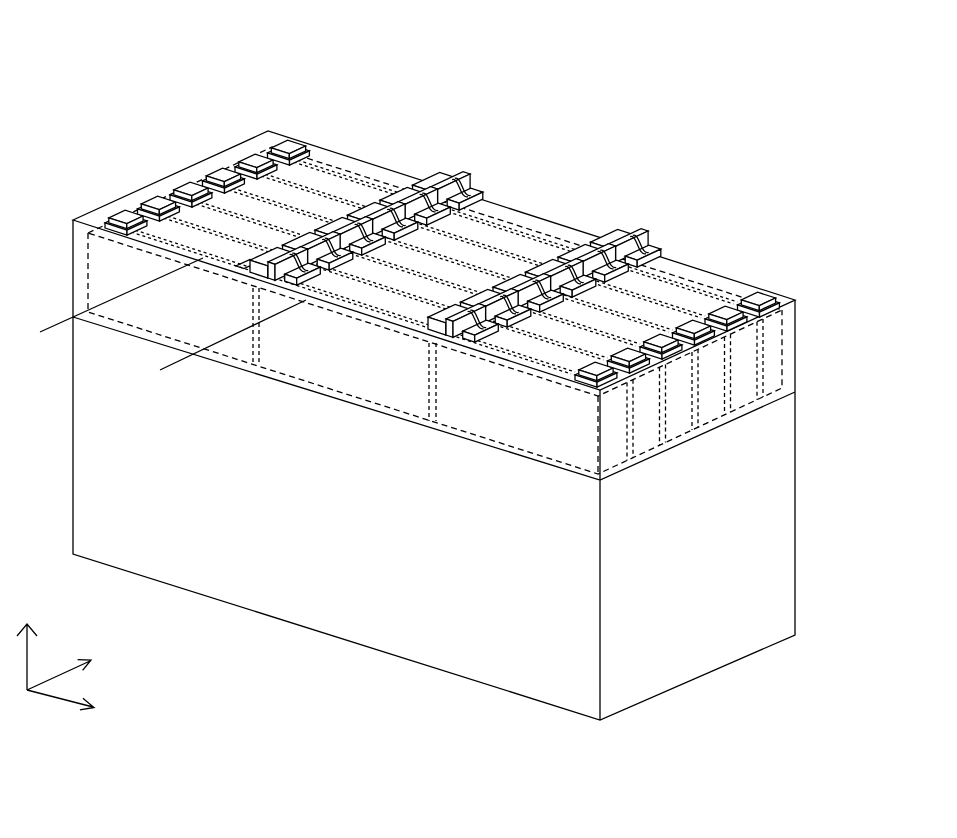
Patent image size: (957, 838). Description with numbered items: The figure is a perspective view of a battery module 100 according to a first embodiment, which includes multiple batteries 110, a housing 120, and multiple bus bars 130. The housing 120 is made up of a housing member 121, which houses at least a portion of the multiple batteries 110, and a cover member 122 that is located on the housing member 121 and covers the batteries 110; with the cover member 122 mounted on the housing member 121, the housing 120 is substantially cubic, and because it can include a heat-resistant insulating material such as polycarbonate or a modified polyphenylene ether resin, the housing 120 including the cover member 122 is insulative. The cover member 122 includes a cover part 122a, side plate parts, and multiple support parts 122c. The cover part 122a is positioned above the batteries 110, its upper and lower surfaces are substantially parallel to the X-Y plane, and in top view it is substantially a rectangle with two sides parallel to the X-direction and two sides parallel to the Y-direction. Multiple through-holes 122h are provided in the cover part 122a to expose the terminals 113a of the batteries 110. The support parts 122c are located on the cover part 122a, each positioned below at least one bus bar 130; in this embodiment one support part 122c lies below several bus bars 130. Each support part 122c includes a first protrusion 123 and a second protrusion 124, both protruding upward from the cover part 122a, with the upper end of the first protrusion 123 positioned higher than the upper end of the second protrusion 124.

The battery module 100 is at (112, 33).
The battery 110 is at (88, 269).
The terminal 113a is at (247, 262).
The housing 120 is at (868, 328).
The housing member 121 is at (796, 473).
The cover member 122 is at (796, 345).
The cover part 122a is at (330, 160).
The support part 122c is at (452, 170).
The through-hole 122h is at (248, 258).
The first protrusion 123 is at (438, 183).
The second protrusion 124 is at (450, 187).
The bus bar 130 is at (290, 262).